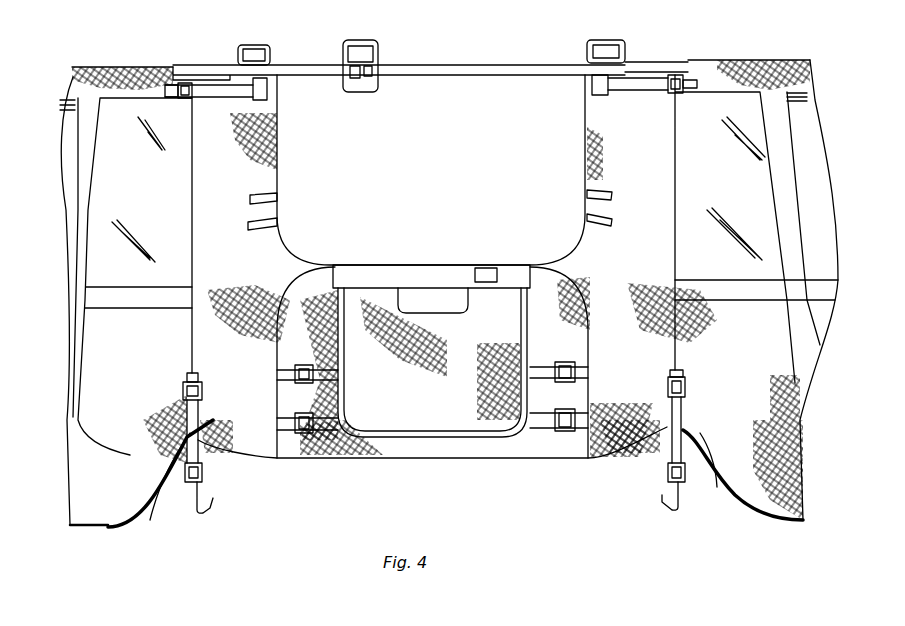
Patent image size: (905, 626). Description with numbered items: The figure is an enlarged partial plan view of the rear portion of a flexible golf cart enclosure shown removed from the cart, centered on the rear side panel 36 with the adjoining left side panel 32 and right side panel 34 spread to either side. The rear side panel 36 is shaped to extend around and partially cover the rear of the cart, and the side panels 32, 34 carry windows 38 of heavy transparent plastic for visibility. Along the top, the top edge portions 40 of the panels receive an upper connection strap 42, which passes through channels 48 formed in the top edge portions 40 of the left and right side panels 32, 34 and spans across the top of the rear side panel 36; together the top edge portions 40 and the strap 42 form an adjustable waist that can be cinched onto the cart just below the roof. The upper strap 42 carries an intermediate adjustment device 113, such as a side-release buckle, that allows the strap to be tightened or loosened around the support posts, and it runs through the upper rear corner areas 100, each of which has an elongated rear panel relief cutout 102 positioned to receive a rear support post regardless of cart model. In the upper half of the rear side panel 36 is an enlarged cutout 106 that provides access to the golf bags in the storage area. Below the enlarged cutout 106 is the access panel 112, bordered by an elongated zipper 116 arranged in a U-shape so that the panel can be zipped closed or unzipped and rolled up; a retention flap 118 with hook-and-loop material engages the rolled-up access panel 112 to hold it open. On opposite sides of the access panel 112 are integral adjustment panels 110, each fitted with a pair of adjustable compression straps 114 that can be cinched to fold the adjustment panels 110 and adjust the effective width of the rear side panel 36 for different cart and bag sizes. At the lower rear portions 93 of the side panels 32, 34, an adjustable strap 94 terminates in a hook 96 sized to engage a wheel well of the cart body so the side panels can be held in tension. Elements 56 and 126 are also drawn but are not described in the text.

The left side panel 32 is at (100, 263).
The right side panel 34 is at (838, 210).
The rear side panel 36 is at (347, 458).
The windows 38 is at (130, 214).
The top edge portions 40 is at (78, 74).
The upper connection strap 42 is at (214, 65).
The channels 48 is at (133, 65).
The lower corner edge 56 is at (118, 530).
The lower rear portions 93 is at (150, 520).
The adjustable strap 94 is at (197, 453).
The hook 96 is at (205, 512).
The upper rear corner area 100 is at (70, 455).
The rear panel relief cutout 102 is at (200, 72).
The enlarged cutout 106 is at (587, 148).
The adjustment panels 110 is at (300, 330).
The access panel 112 is at (403, 412).
The intermediate adjustment device 113 is at (352, 80).
The adjustable compression straps 114 is at (287, 378).
The zipper 116 is at (362, 458).
The retention flap 118 is at (435, 303).
The clip 126 is at (625, 40).